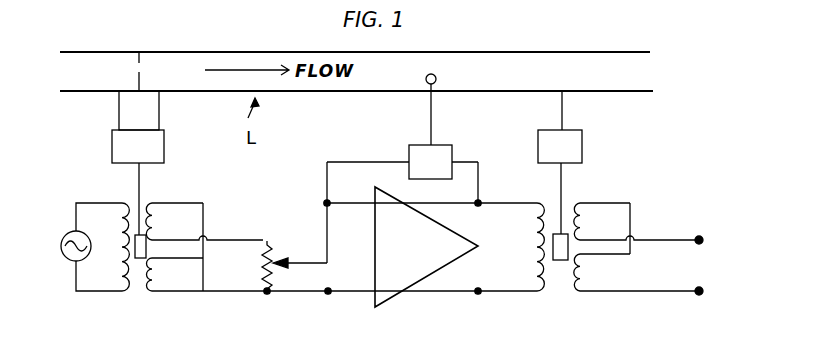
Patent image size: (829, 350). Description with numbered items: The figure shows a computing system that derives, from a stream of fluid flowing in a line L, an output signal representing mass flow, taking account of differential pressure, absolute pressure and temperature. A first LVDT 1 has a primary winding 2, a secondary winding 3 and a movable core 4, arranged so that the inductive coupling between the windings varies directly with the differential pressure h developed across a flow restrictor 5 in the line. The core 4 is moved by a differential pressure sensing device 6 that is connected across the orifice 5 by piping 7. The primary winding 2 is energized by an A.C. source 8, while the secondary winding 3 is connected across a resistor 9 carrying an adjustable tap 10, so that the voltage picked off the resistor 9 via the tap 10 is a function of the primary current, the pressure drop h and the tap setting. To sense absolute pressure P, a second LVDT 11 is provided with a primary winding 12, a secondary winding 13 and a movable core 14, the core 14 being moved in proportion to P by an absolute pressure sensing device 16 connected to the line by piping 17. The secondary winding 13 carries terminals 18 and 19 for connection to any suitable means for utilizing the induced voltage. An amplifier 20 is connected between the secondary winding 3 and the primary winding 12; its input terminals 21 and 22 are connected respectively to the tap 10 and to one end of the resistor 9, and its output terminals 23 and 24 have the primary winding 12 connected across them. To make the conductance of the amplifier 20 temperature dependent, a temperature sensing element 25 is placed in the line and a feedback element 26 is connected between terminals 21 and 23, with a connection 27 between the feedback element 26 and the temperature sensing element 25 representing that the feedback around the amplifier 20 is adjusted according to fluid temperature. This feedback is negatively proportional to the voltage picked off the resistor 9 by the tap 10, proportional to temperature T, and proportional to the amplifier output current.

The LVDT 1 is at (157, 256).
The primary winding 2 is at (131, 203).
The secondary winding 3 is at (147, 206).
The movable core 4 is at (143, 259).
The flow restrictor 5 is at (138, 63).
The differential pressure sensing device 6 is at (144, 157).
The piping 7 is at (152, 103).
The A.C. source 8 is at (65, 235).
The resistor 9 is at (268, 257).
The adjustable tap 10 is at (290, 261).
The second LVDT 11 is at (609, 254).
The primary winding 12 is at (541, 272).
The secondary winding 13 is at (579, 209).
The movable core 14 is at (556, 234).
The absolute pressure sensing device 16 is at (550, 156).
The piping 17 is at (562, 107).
The terminal 18 is at (701, 237).
The terminal 19 is at (701, 289).
The amplifier 20 is at (420, 260).
The input terminal 21 is at (326, 203).
The input terminal 22 is at (327, 293).
The output terminal 23 is at (480, 205).
The output terminal 24 is at (477, 294).
The temperature sensing element 25 is at (426, 83).
The feedback element 26 is at (422, 175).
The connection 27 is at (431, 110).